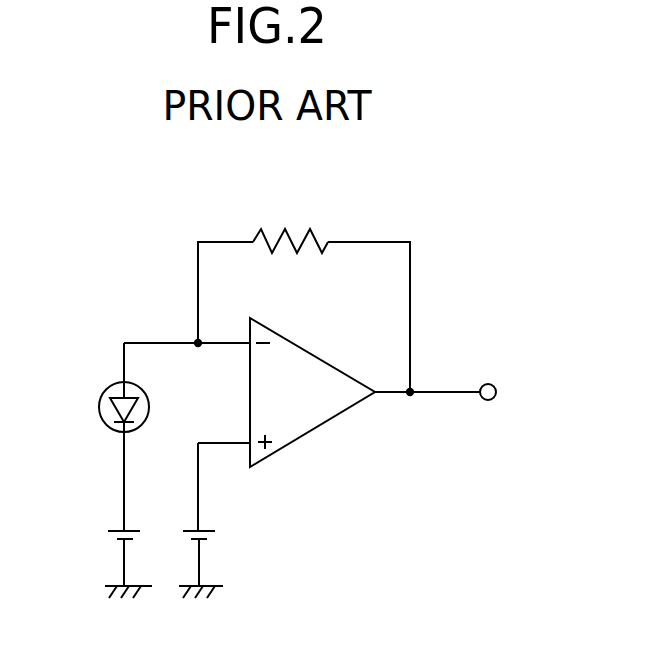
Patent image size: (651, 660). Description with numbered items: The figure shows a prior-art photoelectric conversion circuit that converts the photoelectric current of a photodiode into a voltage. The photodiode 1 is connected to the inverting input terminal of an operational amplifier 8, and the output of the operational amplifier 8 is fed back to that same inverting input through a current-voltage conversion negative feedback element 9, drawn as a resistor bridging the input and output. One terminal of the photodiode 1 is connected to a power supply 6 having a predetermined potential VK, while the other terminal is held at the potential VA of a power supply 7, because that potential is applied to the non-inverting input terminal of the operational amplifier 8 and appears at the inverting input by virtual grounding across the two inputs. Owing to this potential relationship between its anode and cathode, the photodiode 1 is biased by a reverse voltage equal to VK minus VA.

The photodiode 1 is at (100, 407).
The power supply 6 is at (108, 532).
The power supply 7 is at (216, 533).
The operational amplifier 8 is at (322, 357).
The current-voltage conversion negative feedback element 9 is at (310, 229).